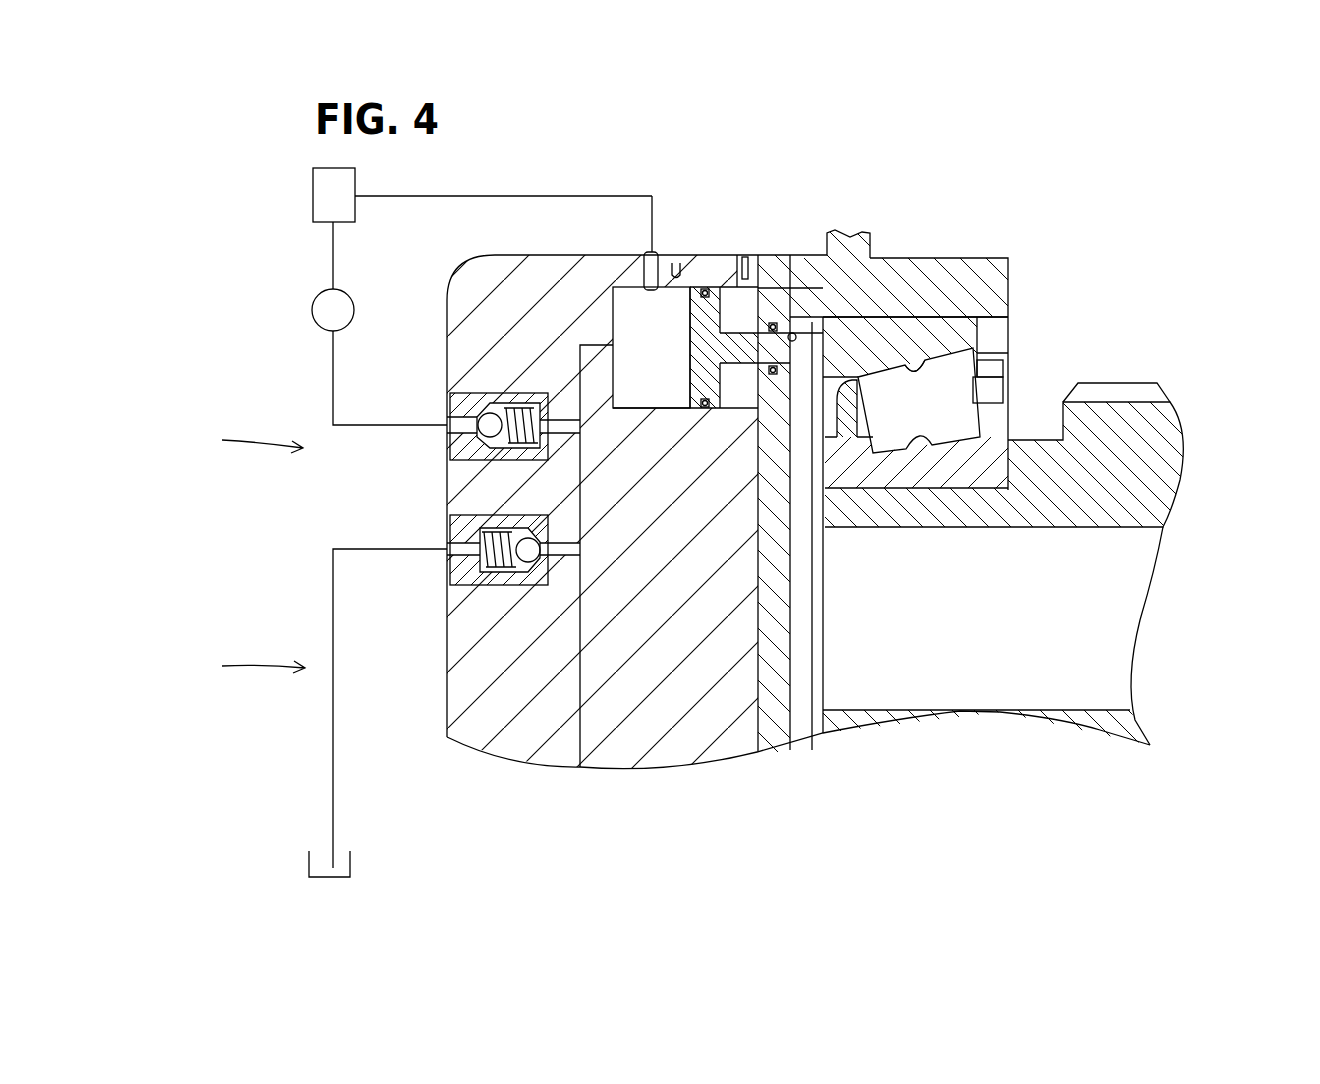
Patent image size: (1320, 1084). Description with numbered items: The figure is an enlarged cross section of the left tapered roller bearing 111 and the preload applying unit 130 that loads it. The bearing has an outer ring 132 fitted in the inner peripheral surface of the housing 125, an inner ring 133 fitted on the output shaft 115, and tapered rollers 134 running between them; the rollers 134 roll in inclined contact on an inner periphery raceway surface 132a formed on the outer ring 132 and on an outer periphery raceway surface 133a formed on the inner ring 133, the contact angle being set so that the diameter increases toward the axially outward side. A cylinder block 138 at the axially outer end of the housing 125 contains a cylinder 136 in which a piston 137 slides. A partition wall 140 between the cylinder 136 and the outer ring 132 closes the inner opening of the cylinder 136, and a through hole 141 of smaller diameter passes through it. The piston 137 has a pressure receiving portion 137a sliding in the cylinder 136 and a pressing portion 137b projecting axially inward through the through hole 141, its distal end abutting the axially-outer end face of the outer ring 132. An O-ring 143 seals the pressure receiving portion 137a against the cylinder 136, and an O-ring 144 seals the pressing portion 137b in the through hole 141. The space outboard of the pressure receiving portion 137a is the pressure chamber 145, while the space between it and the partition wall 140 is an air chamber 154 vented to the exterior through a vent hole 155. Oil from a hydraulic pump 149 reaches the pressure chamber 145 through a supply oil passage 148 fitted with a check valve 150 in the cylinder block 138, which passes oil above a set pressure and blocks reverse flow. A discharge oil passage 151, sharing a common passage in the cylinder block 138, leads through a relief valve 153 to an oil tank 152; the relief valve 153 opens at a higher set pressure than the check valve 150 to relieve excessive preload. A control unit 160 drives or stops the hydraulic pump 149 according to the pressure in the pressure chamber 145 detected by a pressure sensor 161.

The tapered roller bearing 111 is at (1008, 290).
The output shaft 115 is at (1143, 452).
The housing 125 is at (890, 290).
The preload applying unit 130 is at (319, 528).
The outer ring 132 is at (973, 333).
The inner periphery raceway surface 132a is at (918, 360).
The inner ring 133 is at (967, 437).
The outer periphery raceway surface 133a is at (893, 440).
The tapered rollers 134 is at (957, 378).
The cylinder 136 is at (677, 262).
The piston 137 is at (693, 300).
The pressure receiving portion 137a is at (687, 347).
The pressing portion 137b is at (723, 367).
The cylinder block 138 is at (470, 690).
The partition wall 140 is at (837, 230).
The through hole 141 is at (797, 285).
The O-ring (first seal member) 143 is at (709, 287).
The O-ring (second seal member) 144 is at (780, 277).
The pressure chamber 145 is at (637, 330).
The supply oil passage 148 is at (330, 367).
The hydraulic pump 149 is at (323, 288).
The check valve 150 is at (490, 393).
The discharge oil passage 151 is at (330, 740).
The oil tank 152 is at (318, 877).
The relief valve 153 is at (460, 605).
The air chamber 154 is at (747, 387).
The vent hole 155 is at (741, 277).
The control unit 160 is at (313, 186).
The pressure sensor 161 is at (645, 280).